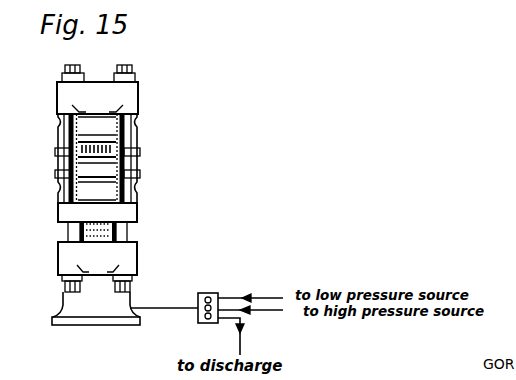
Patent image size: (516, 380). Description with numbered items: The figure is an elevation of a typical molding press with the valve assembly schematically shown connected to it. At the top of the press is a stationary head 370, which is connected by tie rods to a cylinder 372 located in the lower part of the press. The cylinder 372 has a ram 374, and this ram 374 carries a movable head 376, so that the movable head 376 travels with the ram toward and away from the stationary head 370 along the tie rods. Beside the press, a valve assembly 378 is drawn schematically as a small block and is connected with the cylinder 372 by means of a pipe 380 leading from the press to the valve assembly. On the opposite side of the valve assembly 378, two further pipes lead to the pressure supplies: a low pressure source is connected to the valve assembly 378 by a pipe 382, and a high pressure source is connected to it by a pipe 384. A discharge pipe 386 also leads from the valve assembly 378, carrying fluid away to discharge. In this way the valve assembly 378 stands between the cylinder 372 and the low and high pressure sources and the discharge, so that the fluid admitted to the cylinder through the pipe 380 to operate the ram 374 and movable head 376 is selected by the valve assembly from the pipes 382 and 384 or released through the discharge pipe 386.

The stationary head 370 is at (138, 141).
The cylinder 372 is at (137, 278).
The ram 374 is at (93, 238).
The movable head 376 is at (139, 175).
The valve assembly 378 is at (208, 292).
The pipe 380 is at (169, 309).
The pipe 382 is at (249, 297).
The pipe 384 is at (261, 311).
The discharge pipe 386 is at (240, 345).